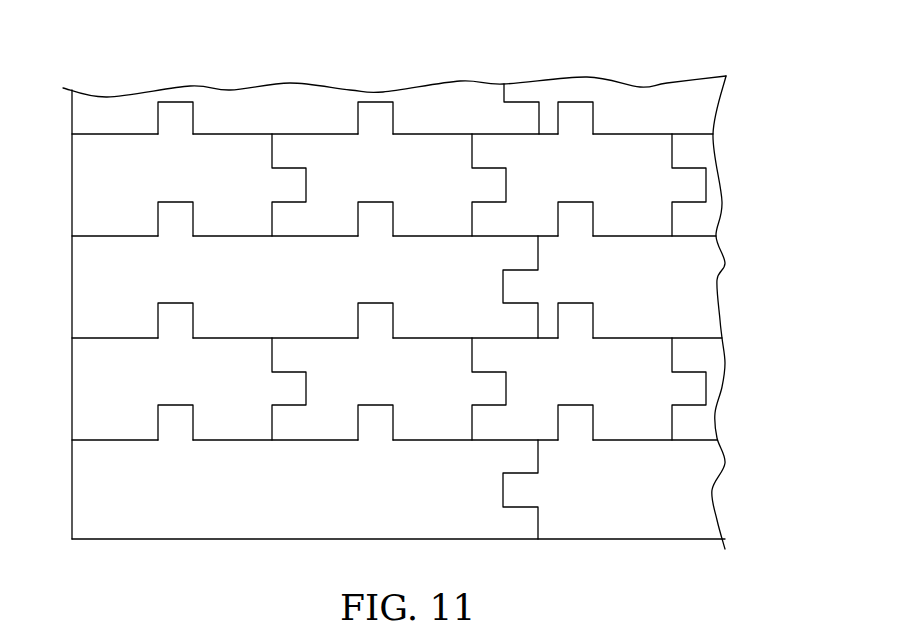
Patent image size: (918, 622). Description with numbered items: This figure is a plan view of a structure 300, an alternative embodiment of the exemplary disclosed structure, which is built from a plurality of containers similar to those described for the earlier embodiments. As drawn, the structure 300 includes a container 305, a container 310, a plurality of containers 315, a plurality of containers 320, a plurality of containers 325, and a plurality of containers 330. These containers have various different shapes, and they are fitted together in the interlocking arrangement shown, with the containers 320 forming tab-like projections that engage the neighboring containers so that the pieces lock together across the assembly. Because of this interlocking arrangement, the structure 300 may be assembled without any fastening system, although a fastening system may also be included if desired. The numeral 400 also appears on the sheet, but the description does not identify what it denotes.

The structure 300 is at (513, 63).
The container 305 is at (183, 520).
The container 310 is at (672, 505).
The containers 315 is at (133, 180).
The containers 320 is at (412, 180).
The containers 325 is at (257, 107).
The containers 330 is at (692, 108).
The sheet 400 is at (602, 614).